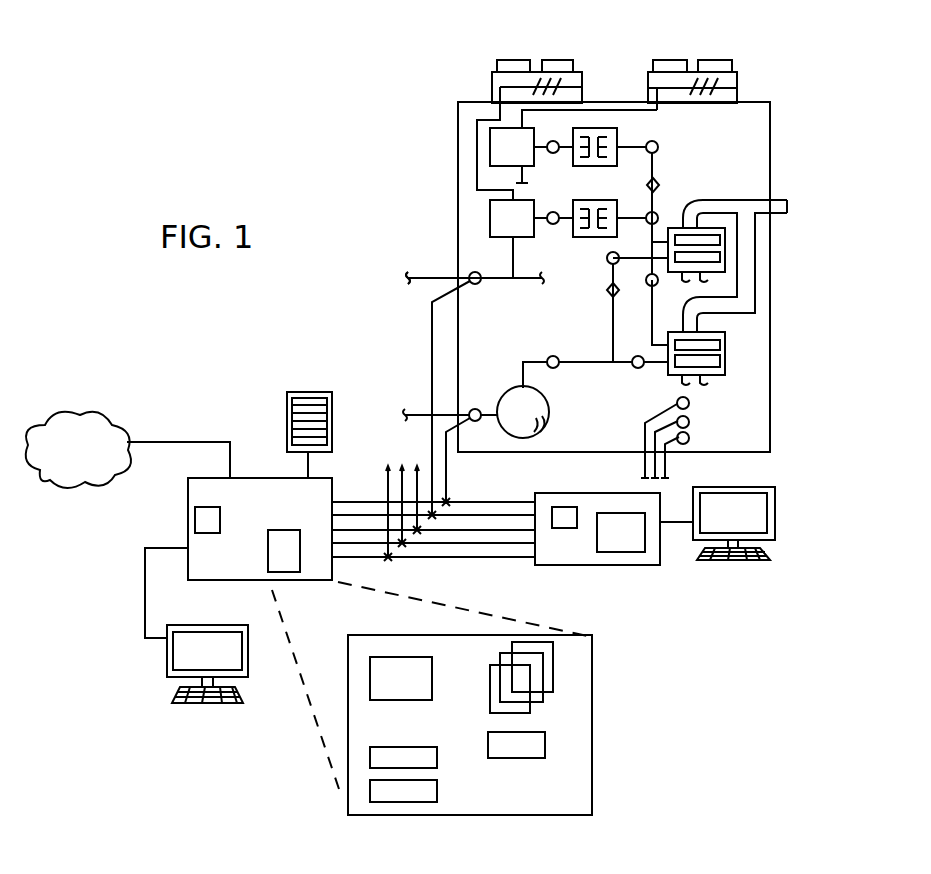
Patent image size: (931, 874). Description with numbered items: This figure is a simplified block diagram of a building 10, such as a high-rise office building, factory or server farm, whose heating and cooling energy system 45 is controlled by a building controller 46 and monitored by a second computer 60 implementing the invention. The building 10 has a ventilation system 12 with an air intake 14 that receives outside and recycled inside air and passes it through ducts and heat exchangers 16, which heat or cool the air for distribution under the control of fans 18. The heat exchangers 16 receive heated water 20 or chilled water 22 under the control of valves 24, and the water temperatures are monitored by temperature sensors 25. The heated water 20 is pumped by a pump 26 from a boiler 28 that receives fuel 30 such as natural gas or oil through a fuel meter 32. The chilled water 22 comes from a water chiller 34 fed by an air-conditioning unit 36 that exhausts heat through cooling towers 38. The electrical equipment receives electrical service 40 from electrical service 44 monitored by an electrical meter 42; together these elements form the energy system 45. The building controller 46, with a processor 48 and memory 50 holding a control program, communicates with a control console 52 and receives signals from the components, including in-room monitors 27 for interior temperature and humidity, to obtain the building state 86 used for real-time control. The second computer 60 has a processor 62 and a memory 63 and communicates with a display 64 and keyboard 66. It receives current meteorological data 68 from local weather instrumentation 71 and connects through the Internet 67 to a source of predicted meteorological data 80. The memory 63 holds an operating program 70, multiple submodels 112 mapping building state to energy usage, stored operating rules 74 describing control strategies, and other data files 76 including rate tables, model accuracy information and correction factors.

The building 10 is at (778, 92).
The ventilation system 12 is at (740, 198).
The air intake 14 is at (787, 207).
The heat exchangers 16 is at (725, 255).
The fans 18 is at (700, 198).
The heated water 20 is at (613, 330).
The chilled water 22 is at (652, 147).
The valves 24 is at (650, 157).
The temperature sensors 25 is at (659, 185).
The pump 26 is at (646, 283).
The in-room monitors 27 is at (689, 403).
The boiler 28 is at (499, 400).
The fuel 30 is at (410, 410).
The fuel meter 32 is at (548, 422).
The water chiller 34 is at (585, 167).
The air-conditioning unit 36 is at (490, 220).
The cooling towers 38 is at (492, 97).
The electrical service 40 is at (497, 285).
The electrical meter 42 is at (460, 268).
The electrical service 44 is at (410, 290).
The energy system 45 is at (818, 122).
The building controller 46 is at (640, 565).
The processor 48 is at (565, 530).
The memory 50 is at (621, 532).
The control console 52 is at (782, 507).
The second computer 60 is at (200, 478).
The processor 62 is at (195, 520).
The memory 63 is at (275, 555).
The display 64 is at (167, 650).
The keyboard 66 is at (173, 697).
The Internet 67 is at (78, 450).
The current meteorological data 68 is at (308, 465).
The operating program 70 is at (370, 682).
The local weather instrumentation 71 is at (287, 395).
The operating rules 74 is at (545, 745).
The data files 76 is at (370, 790).
The predicted meteorological data 80 is at (168, 442).
The building state 86 is at (455, 578).
The submodels 112 is at (553, 655).